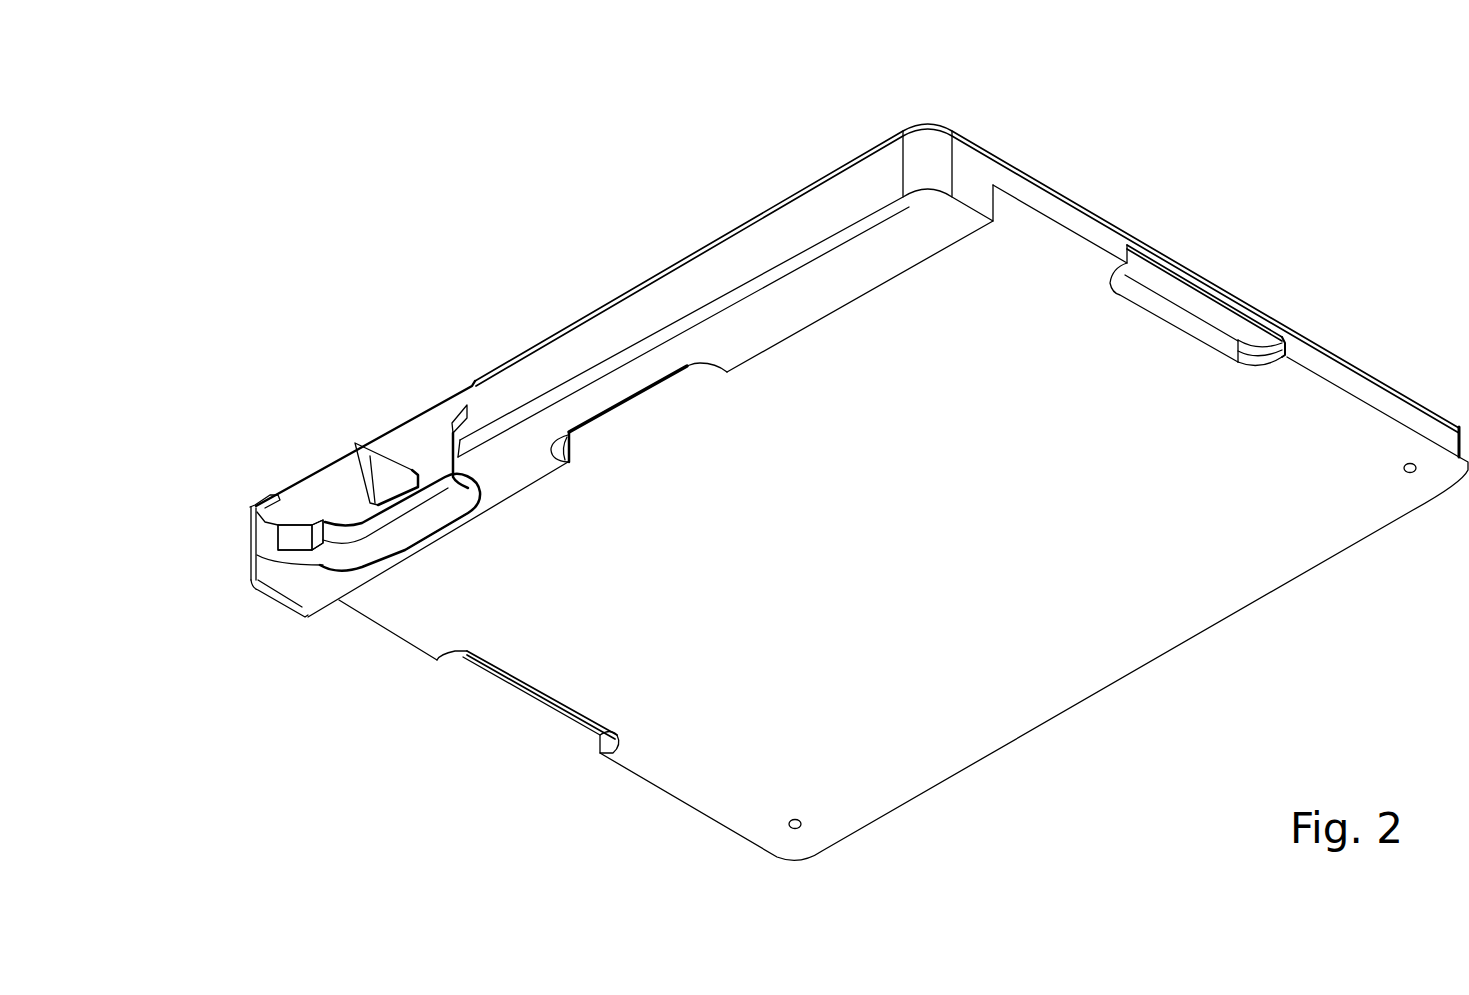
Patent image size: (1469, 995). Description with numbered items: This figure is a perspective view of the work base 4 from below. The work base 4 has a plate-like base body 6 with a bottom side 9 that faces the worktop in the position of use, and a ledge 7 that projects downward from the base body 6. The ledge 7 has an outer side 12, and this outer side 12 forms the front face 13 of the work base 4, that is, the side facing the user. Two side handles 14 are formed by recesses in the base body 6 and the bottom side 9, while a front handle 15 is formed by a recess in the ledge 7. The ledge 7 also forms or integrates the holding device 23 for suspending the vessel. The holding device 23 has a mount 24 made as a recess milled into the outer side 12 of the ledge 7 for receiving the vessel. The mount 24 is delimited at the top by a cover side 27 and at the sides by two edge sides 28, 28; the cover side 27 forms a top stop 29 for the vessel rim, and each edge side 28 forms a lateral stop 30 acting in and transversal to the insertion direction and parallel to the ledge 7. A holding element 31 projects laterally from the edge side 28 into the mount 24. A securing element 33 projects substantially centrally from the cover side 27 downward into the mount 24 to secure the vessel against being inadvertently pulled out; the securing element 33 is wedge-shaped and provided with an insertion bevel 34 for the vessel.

The work base 4 is at (432, 132).
The base body 6 is at (1050, 205).
The ledge 7 is at (963, 180).
The bottom side 9 is at (1247, 445).
The outer side 12 is at (793, 227).
The front face 13 is at (967, 281).
The side handle 14 is at (1183, 286).
The front handle 15 is at (637, 405).
The holding device 23 is at (322, 492).
The mount 24 is at (385, 515).
The cover side 27 is at (427, 460).
The edge side 28 is at (295, 536).
The top stop 29 is at (403, 500).
The lateral stop 30 is at (317, 535).
The holding element 31 is at (448, 487).
The securing element 33 is at (397, 472).
The insertion bevel 34 is at (385, 482).